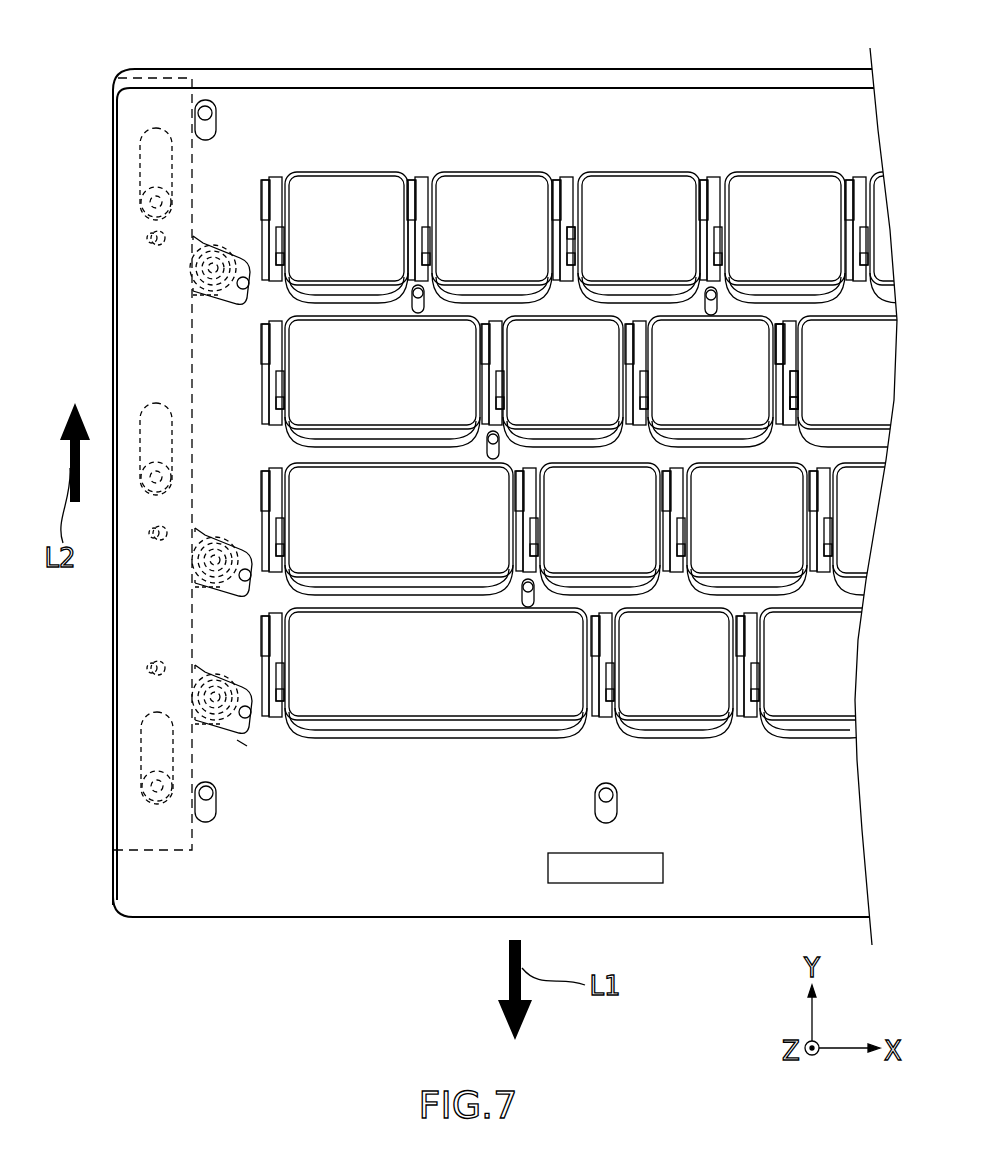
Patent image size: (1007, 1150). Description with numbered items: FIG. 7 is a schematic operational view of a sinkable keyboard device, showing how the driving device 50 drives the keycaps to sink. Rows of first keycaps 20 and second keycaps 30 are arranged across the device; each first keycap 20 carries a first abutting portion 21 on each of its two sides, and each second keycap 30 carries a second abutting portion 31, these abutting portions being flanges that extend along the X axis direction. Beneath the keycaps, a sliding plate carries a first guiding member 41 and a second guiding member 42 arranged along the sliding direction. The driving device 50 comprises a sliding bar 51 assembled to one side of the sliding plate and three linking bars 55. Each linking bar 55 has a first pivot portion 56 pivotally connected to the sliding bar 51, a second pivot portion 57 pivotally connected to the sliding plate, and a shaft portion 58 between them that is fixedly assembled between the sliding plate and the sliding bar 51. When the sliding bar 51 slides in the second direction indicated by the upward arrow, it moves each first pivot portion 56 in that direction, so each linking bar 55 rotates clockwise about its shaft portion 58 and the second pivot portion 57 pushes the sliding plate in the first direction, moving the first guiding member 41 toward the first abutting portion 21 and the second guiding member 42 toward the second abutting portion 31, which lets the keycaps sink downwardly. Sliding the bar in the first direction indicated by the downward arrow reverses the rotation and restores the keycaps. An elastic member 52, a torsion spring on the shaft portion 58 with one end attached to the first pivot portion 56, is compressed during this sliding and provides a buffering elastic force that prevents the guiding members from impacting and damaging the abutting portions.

The first keycap 20 is at (357, 210).
The first abutting portion 21 is at (282, 225).
The second keycap 30 is at (593, 355).
The second abutting portion 31 is at (790, 357).
The first guiding member 41 is at (570, 236).
The second guiding member 42 is at (790, 400).
The driving device 50 is at (156, 72).
The sliding bar 51 is at (125, 153).
The elastic member 52 is at (228, 236).
The linking bar 55 is at (245, 748).
The first pivot portion 56 is at (152, 238).
The second pivot portion 57 is at (238, 290).
The shaft portion 58 is at (210, 268).